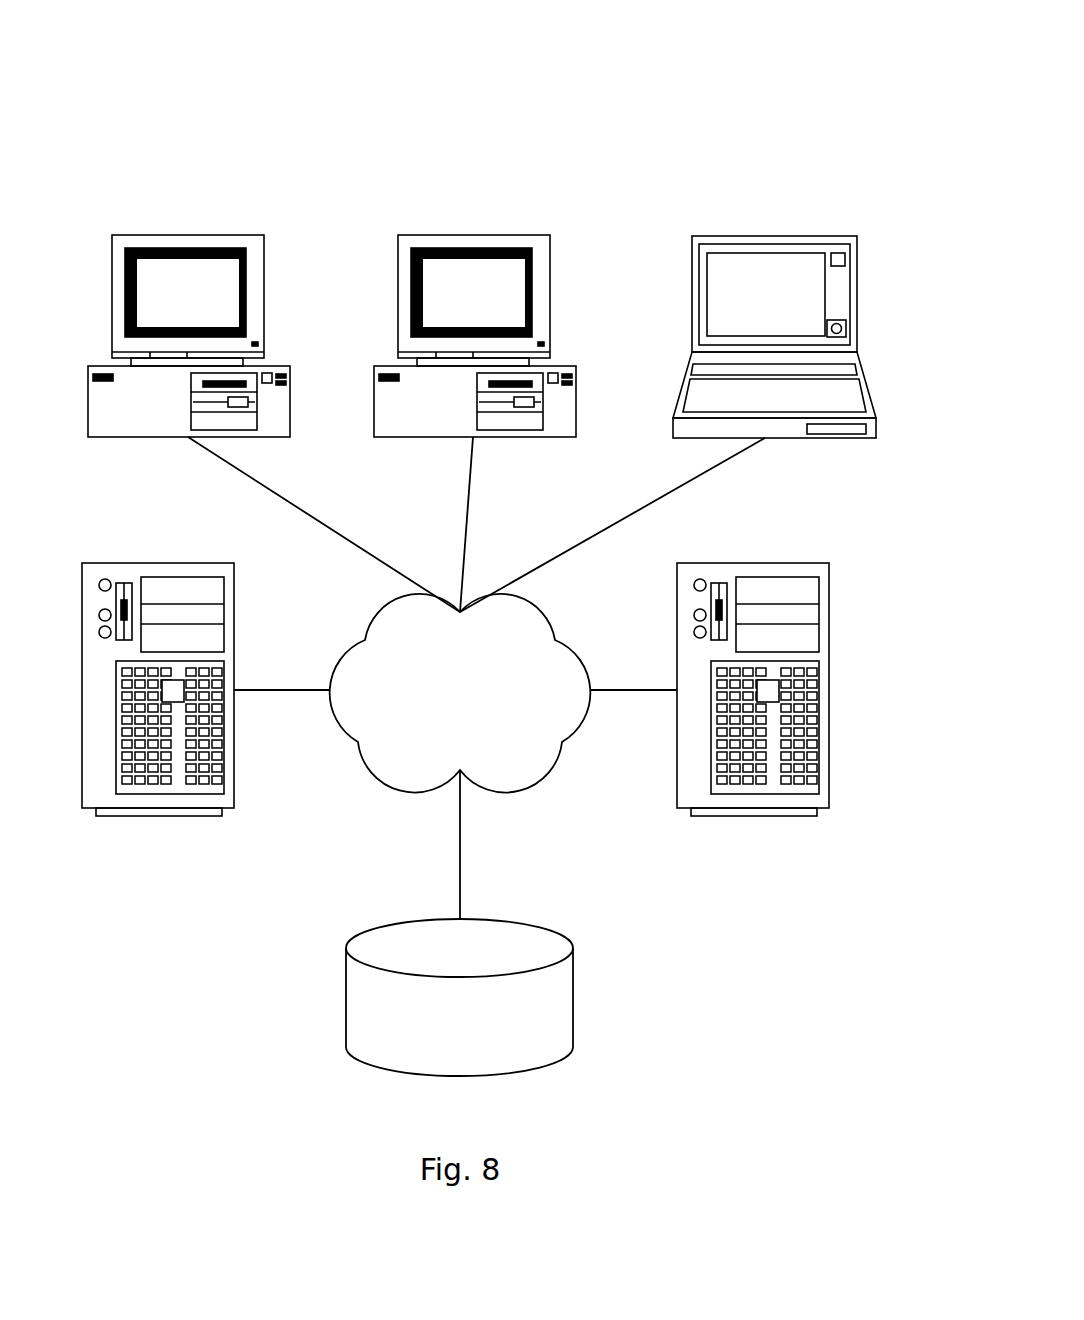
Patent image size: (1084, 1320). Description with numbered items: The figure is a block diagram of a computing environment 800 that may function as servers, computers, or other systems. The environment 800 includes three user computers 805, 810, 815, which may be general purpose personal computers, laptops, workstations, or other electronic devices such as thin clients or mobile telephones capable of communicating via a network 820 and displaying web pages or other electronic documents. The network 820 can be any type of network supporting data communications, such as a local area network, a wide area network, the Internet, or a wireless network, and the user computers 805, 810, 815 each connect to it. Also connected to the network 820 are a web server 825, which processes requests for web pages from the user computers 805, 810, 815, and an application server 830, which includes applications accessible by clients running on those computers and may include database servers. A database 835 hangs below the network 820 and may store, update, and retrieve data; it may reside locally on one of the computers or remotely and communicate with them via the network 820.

The computing environment 800 is at (233, 92).
The user computer 805 is at (290, 437).
The user computer 810 is at (576, 437).
The user computer 815 is at (822, 438).
The network 820 is at (520, 785).
The web server 825 is at (234, 780).
The application server 830 is at (829, 780).
The database 835 is at (573, 995).